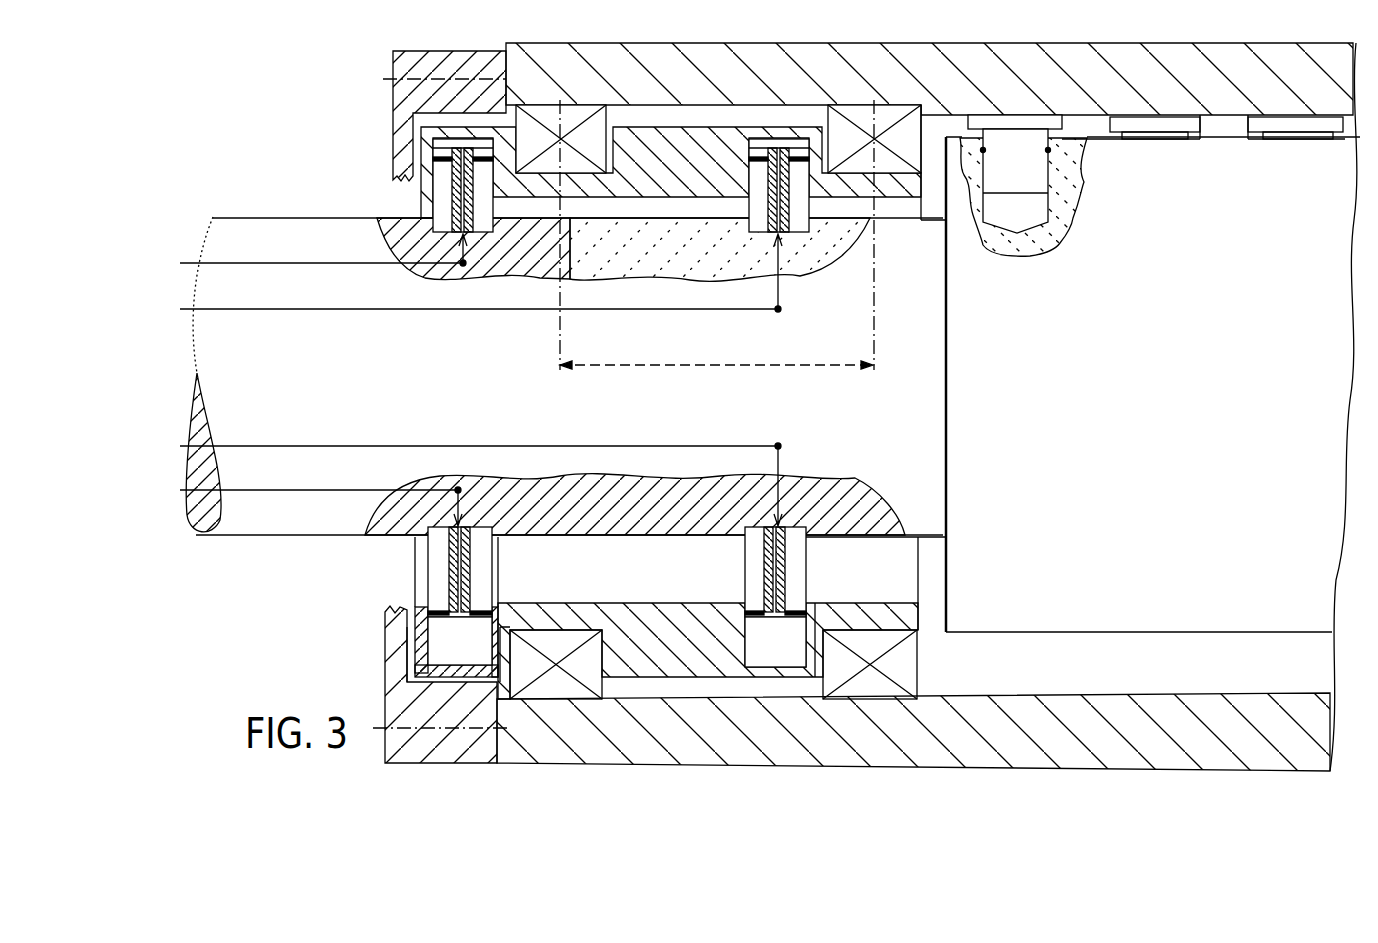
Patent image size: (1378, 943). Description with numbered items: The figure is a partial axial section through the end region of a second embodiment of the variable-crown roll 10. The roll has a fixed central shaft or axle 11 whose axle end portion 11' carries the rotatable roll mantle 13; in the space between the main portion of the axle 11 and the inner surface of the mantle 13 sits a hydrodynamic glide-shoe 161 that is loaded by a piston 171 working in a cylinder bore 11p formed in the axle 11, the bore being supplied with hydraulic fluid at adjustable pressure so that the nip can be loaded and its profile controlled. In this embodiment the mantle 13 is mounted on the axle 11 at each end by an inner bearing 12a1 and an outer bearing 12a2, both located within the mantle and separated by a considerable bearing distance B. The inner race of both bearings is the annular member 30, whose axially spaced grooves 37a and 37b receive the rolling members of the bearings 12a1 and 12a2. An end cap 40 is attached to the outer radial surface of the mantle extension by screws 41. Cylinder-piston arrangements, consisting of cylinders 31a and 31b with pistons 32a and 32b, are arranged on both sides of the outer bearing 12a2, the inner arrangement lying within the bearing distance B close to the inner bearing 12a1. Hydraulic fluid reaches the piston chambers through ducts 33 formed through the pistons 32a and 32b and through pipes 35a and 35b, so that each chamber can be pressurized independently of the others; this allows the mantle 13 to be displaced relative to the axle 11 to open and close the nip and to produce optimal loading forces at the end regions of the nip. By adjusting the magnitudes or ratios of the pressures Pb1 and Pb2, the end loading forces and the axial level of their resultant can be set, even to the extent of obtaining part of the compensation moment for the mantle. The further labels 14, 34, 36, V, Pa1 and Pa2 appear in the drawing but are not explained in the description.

The variable-crown roll 10 is at (1262, 574).
The central axle 11 is at (1092, 407).
The axle end portion 11' is at (564, 399).
The cylinder bore 11p is at (1072, 248).
The inner bearing 12a1 is at (920, 262).
The outer bearing 12a2 is at (577, 115).
The roll mantle 13 is at (1240, 128).
The base block 14 is at (1277, 777).
The hydrodynamic glide-shoe 161 is at (1062, 125).
The piston 171 is at (1092, 217).
The annular member 30 is at (640, 628).
The cylinder 31a is at (433, 640).
The cylinder 31b is at (430, 135).
The piston 32a is at (433, 563).
The piston 32b is at (413, 197).
The duct 33 is at (472, 215).
The pressure passage 34 is at (781, 464).
The pipe 35a is at (383, 445).
The pipe 35b is at (410, 309).
The cylinder wall 36 is at (835, 262).
The groove 37a is at (945, 607).
The groove 37b is at (684, 605).
The end cap 40 is at (405, 108).
The screw 41 is at (383, 78).
The bearing distance B is at (716, 355).
The valve V is at (1212, 130).
The pressure a1 Pa1 is at (303, 448).
The pressure a2 Pa2 is at (240, 490).
The pressure Pb1 is at (373, 264).
The pressure Pb2 is at (222, 264).